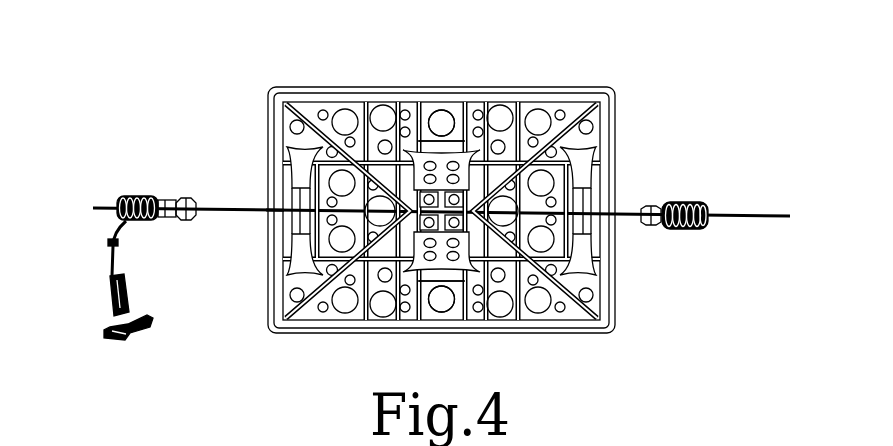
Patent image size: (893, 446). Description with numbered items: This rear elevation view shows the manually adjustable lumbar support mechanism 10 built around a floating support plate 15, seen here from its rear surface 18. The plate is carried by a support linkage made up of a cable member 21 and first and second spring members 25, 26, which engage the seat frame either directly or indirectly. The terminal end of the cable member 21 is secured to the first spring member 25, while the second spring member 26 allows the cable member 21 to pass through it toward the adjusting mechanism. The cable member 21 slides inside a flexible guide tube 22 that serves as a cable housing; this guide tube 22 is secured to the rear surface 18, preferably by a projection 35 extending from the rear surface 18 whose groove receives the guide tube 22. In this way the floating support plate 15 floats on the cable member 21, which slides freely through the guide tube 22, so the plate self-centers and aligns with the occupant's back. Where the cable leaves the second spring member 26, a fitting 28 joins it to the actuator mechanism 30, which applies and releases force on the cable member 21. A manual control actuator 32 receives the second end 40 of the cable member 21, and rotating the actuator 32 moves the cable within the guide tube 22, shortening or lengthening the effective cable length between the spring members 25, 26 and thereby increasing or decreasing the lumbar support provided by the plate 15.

The hanging display assembly 10 is at (299, 56).
The floating support plate 15 is at (376, 78).
The rear surface 18 is at (493, 250).
The cable member 21 is at (226, 207).
The flexible guide tube 22 is at (270, 215).
The first spring member 25 is at (700, 202).
The second spring member 26 is at (138, 196).
The connector nut 28 is at (641, 208).
The actuator mechanism 30 is at (88, 290).
The manual control actuator 32 is at (128, 350).
The projection 35 is at (463, 152).
The second end 40 is at (122, 277).